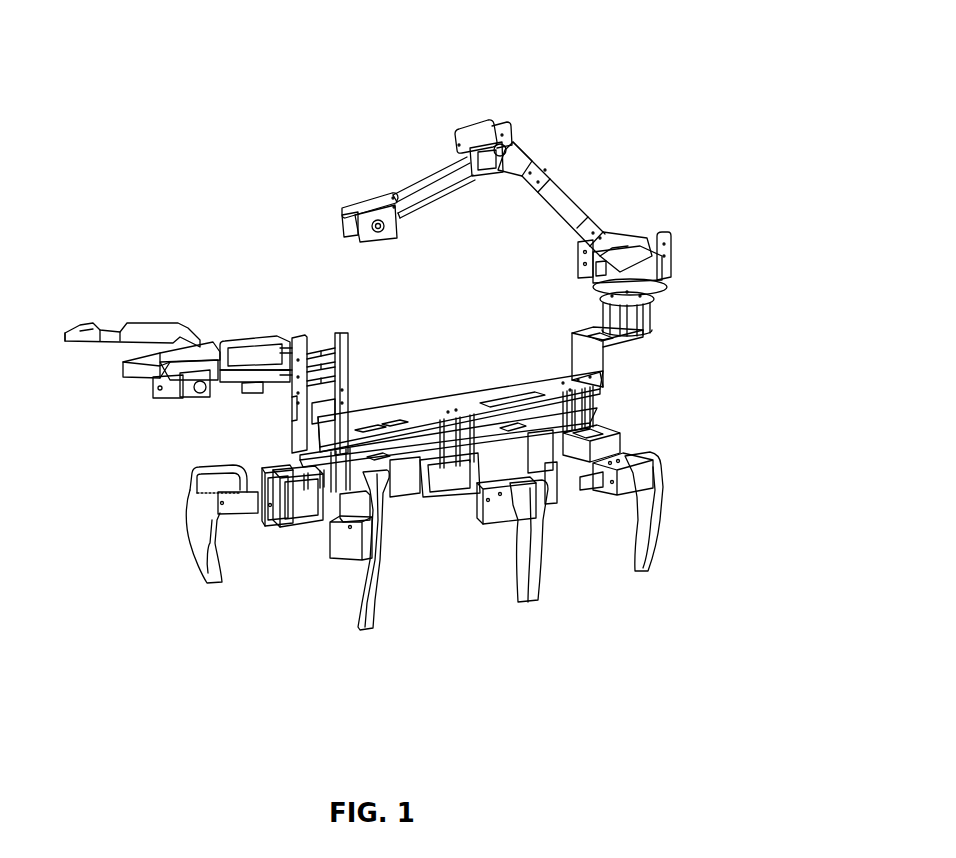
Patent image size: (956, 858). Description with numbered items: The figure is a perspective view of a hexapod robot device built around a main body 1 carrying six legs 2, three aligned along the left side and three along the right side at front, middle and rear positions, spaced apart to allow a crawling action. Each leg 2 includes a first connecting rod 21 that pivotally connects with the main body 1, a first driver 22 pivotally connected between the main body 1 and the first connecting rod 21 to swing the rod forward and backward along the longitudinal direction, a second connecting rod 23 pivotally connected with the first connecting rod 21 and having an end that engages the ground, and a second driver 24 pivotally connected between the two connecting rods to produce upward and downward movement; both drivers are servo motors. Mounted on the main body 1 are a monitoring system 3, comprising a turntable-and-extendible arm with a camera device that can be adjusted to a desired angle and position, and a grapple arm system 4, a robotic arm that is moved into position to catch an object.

The main body 1 is at (462, 410).
The legs 2 is at (220, 655).
The monitoring system 3 is at (601, 128).
The grapple arm system 4 is at (232, 282).
The first connecting rod 21 is at (267, 520).
The first driver 22 is at (307, 513).
The second connecting rod 23 is at (207, 575).
The second driver 24 is at (218, 498).